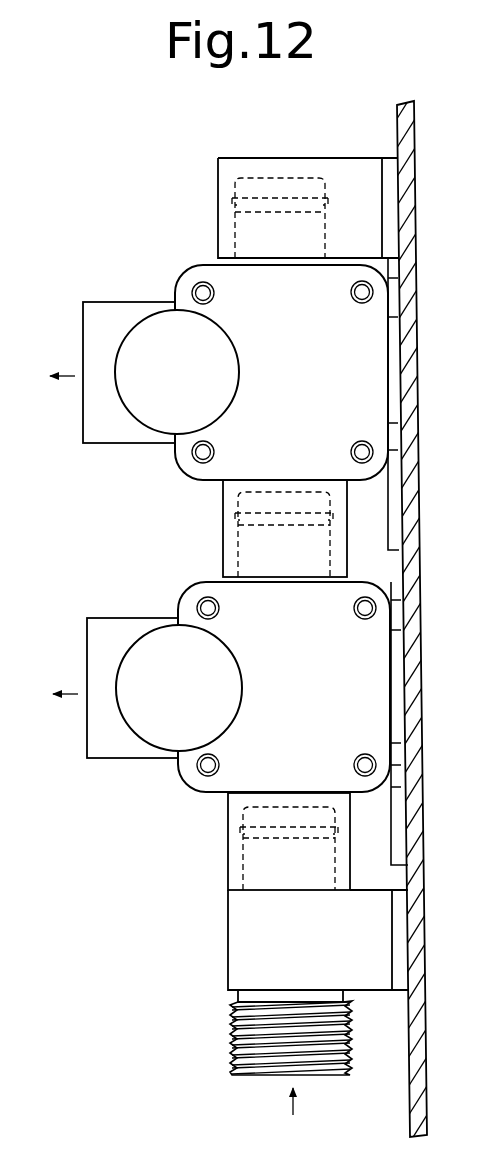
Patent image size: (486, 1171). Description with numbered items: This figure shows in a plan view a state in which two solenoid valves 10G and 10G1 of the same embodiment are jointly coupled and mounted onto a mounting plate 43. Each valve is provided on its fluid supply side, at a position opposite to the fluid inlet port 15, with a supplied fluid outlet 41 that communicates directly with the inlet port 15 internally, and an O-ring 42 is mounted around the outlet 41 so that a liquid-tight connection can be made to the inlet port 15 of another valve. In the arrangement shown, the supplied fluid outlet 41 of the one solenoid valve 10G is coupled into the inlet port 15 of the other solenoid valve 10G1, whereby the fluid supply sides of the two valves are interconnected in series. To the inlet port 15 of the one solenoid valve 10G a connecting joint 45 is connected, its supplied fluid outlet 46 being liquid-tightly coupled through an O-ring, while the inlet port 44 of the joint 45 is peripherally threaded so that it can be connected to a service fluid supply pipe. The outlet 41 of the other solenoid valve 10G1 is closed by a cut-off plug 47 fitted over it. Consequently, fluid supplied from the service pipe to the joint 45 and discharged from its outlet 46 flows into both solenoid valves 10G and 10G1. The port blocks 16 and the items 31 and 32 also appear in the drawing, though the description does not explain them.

The solenoid valve 10G1 is at (231, 370).
The solenoid valve 10G is at (235, 709).
The fluid inlet port 15 is at (225, 502).
The port block 16 is at (83, 333).
The supplied fluid outlet 41 is at (327, 233).
The O-ring 42 is at (332, 203).
The mounting plate 43 is at (405, 373).
The inlet port 44 is at (232, 1042).
The connecting joint 45 is at (243, 946).
The supplied fluid outlet 46 is at (243, 862).
The cut-off plug 47 is at (302, 158).
The valve body 31 is at (478, 663).
The valve body 32 is at (478, 693).